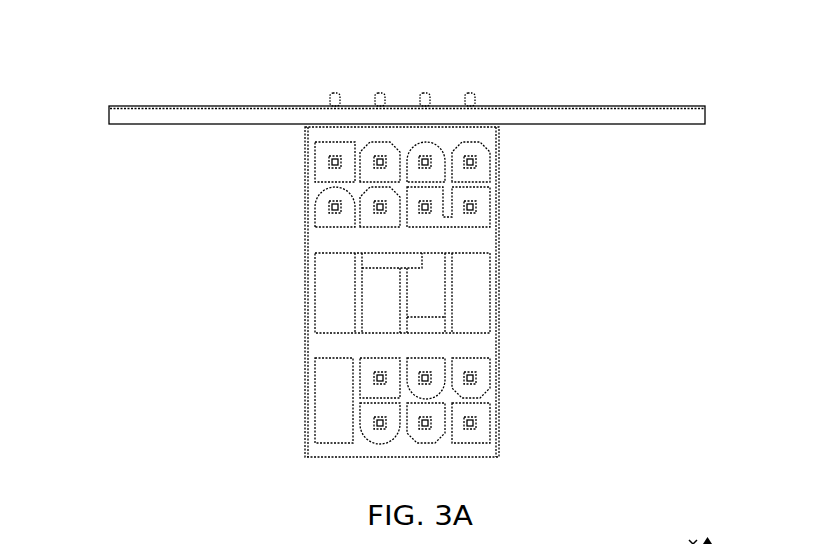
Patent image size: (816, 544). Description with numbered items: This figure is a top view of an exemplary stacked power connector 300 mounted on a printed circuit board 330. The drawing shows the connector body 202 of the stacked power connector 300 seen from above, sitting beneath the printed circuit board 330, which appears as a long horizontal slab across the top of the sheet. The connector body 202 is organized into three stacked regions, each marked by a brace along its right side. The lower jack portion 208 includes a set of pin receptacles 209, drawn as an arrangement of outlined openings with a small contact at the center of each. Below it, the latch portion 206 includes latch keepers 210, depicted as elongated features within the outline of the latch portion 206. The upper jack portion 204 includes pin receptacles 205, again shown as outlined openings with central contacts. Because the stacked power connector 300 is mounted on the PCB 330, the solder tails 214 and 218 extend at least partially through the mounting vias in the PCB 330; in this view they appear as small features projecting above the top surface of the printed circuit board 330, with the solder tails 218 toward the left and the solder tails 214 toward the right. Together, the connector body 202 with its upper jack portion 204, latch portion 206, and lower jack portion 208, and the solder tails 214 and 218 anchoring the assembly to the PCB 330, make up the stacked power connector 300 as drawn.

The stacked power connector 300 is at (103, 184).
The printed circuit board 330 is at (613, 116).
The solder tails 218 is at (380, 93).
The solder tails 214 is at (425, 93).
The connector body 202 is at (320, 233).
The lower jack portion 208 is at (518, 137).
The pin receptacles 209 is at (380, 206).
The latch portion 206 is at (518, 248).
The latch keepers 210 is at (428, 325).
The upper jack portion 204 is at (518, 358).
The pin receptacles 205 is at (420, 423).